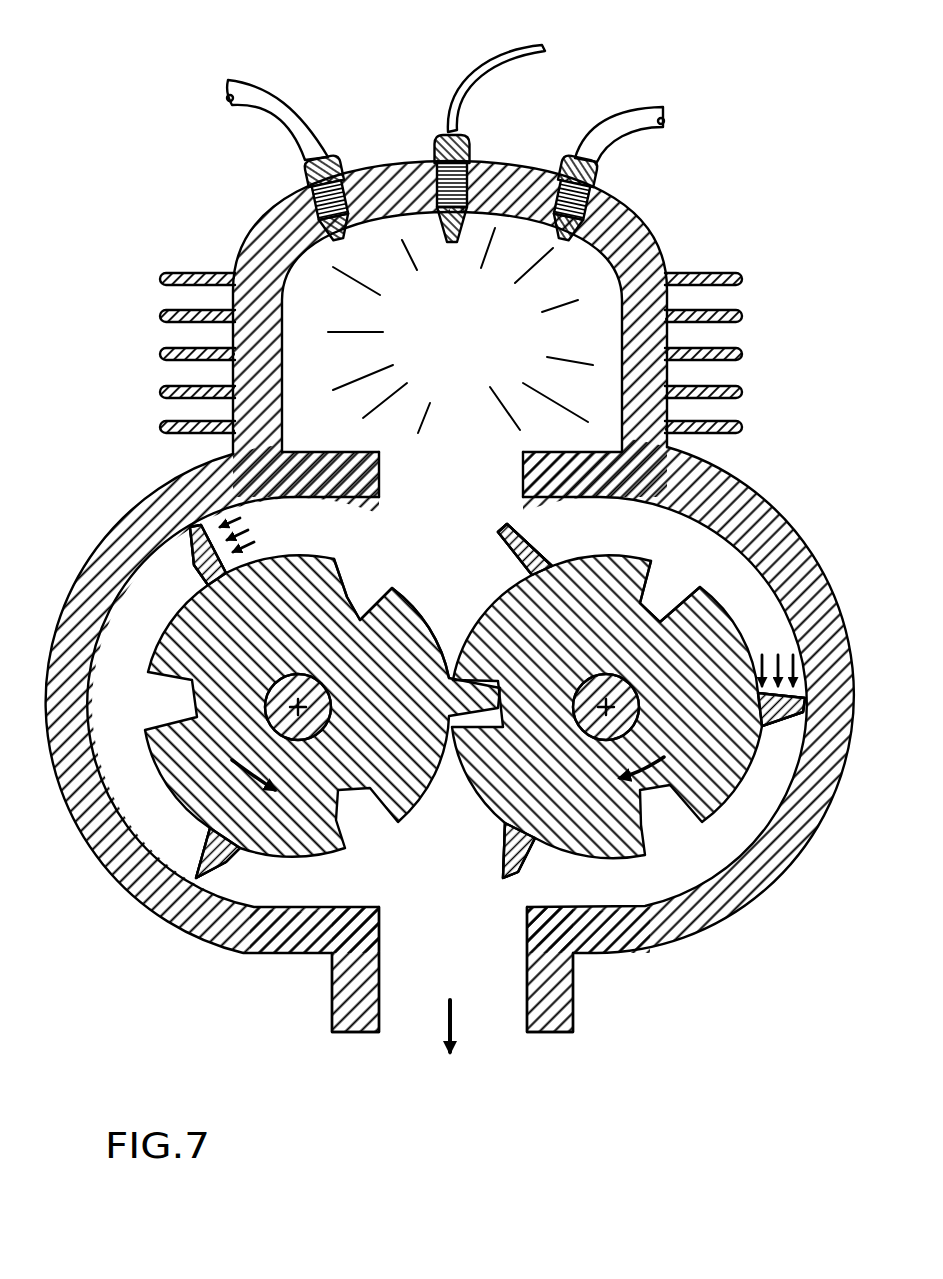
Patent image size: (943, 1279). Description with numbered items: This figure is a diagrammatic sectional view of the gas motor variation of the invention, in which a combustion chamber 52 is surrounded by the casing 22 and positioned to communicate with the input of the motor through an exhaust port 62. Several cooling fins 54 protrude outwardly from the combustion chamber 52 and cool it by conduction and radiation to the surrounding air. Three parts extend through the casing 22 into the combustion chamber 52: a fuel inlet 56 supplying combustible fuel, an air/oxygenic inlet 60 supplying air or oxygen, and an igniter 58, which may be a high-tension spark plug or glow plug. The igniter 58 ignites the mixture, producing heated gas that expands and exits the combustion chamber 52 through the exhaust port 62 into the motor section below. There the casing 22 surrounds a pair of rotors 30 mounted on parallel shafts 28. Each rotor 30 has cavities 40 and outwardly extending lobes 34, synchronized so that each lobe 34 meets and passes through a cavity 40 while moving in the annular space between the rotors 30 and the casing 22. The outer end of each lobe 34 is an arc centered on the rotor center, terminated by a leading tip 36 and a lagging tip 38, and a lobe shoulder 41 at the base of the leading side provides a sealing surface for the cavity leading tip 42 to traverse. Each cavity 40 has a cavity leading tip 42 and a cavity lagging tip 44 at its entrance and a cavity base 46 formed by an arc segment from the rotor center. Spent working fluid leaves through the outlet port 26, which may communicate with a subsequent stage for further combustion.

The casing 22 is at (168, 512).
The outlet port 26 is at (410, 1010).
The parallel shafts 28 is at (355, 820).
The rotors 30 is at (183, 778).
The lobe 34 is at (510, 565).
The lobe leading tip 36 is at (503, 527).
The lobe lagging tip 38 is at (492, 531).
The cavity 40 is at (665, 582).
The lobe shoulder 41 is at (532, 549).
The cavity leading tip 42 is at (352, 568).
The cavity lagging tip 44 is at (390, 580).
The cavity base 46 is at (362, 617).
The combustion chamber 52 is at (330, 273).
The cooling fins 54 is at (160, 352).
The fuel inlet 56 is at (308, 168).
The igniter 58 is at (473, 140).
The air/oxygenic inlet 60 is at (600, 175).
The exhaust port 62 is at (490, 468).